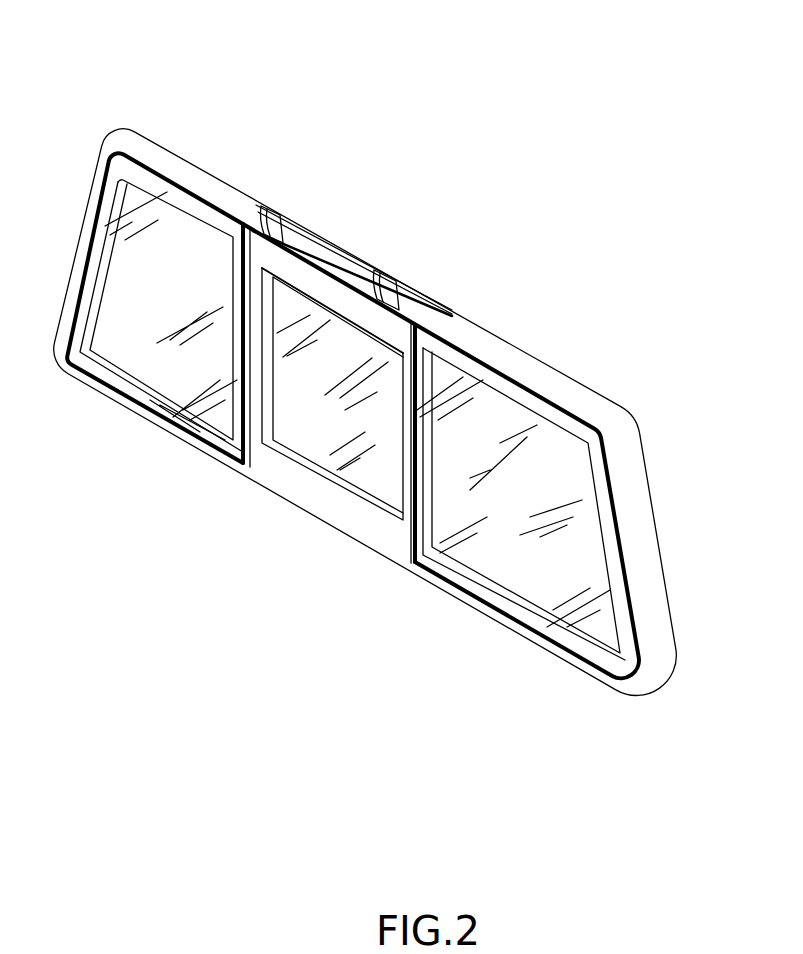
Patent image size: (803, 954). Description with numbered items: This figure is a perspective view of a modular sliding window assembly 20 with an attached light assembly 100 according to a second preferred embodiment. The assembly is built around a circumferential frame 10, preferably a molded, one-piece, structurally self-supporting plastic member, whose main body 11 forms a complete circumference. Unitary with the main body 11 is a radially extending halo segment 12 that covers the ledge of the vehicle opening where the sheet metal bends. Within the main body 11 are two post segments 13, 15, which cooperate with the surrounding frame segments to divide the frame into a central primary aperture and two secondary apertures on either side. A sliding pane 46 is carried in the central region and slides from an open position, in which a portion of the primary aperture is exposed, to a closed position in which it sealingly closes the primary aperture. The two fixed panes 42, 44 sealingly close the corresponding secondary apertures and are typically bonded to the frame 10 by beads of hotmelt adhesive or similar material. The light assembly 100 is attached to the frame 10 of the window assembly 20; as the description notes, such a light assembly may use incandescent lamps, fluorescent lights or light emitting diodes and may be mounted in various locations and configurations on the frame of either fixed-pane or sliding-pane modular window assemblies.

The frame 10 is at (320, 508).
The main body 11 is at (352, 303).
The halo segment 12 is at (578, 400).
The post segment 13 is at (257, 317).
The post segment 15 is at (418, 418).
The modular window assembly 20 is at (259, 148).
The fixed pane 42 is at (161, 316).
The fixed pane 44 is at (513, 502).
The sliding pane 46 is at (338, 395).
The light assembly 100 is at (345, 243).